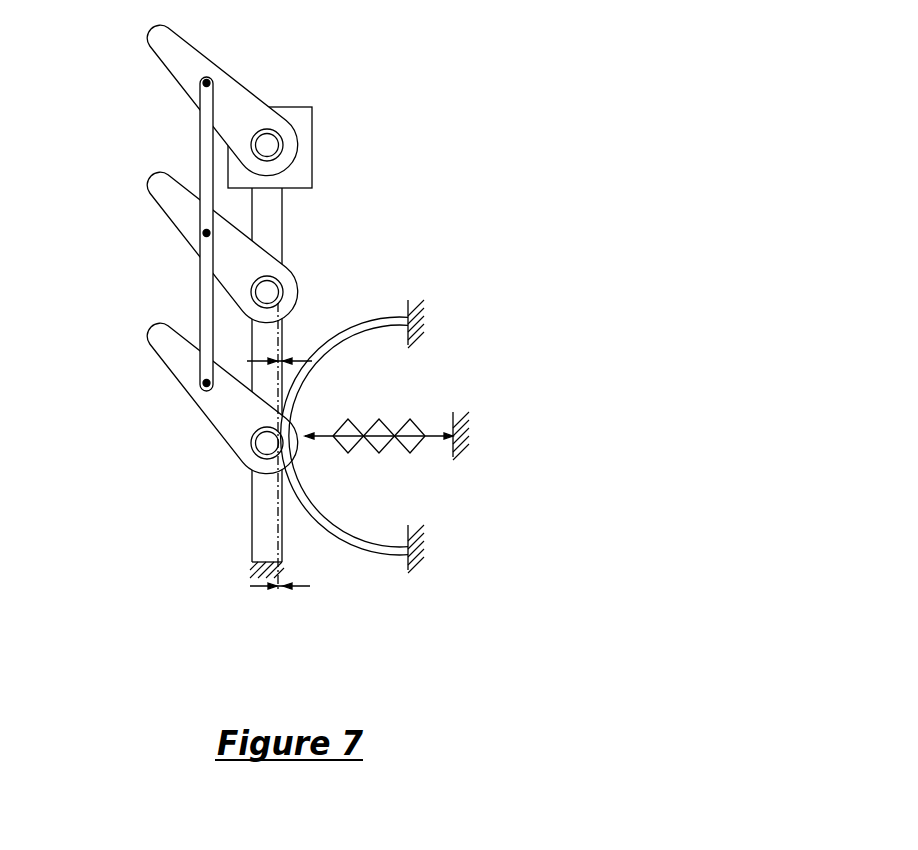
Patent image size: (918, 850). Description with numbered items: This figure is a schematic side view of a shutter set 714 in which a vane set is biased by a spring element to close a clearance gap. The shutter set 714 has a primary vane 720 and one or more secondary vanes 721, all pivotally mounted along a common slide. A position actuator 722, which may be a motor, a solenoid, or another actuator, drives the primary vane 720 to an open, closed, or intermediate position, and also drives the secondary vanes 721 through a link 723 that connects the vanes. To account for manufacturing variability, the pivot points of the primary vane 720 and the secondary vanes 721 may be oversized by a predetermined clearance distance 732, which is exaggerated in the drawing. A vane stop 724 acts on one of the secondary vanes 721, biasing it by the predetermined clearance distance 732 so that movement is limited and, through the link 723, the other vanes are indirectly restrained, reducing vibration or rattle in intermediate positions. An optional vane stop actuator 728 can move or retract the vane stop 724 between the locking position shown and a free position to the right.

The shutter set 714 is at (548, 113).
The primary vane 720 is at (162, 50).
The secondary vanes 721 is at (160, 193).
The position actuator 722 is at (301, 120).
The link 723 is at (200, 291).
The vane stop 724 is at (372, 328).
The vane stop actuator 728 is at (410, 450).
The predetermined clearance distance 732 is at (293, 360).